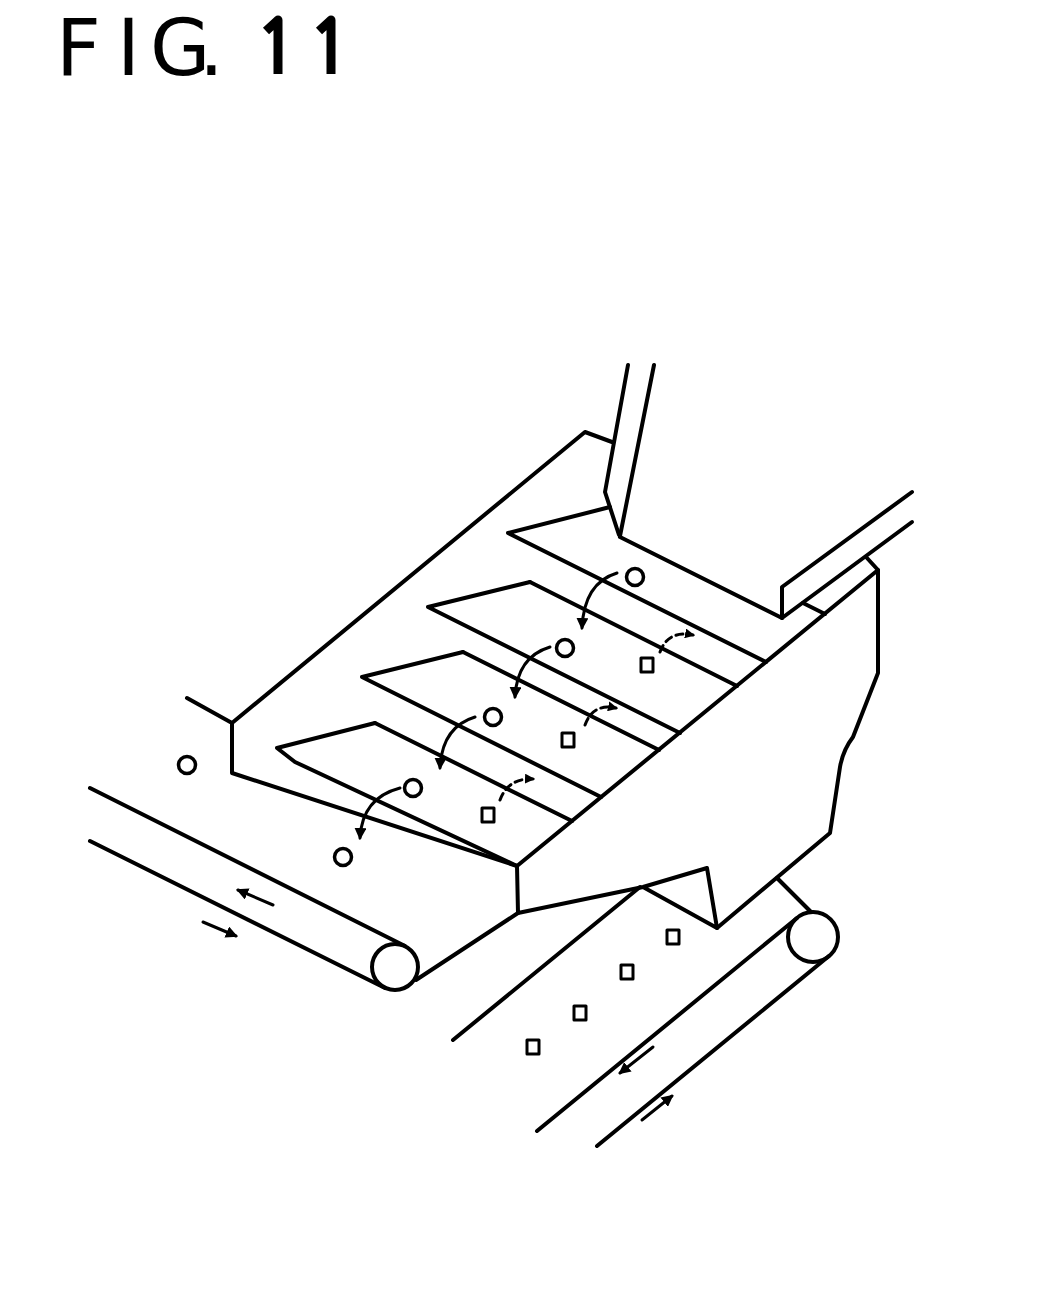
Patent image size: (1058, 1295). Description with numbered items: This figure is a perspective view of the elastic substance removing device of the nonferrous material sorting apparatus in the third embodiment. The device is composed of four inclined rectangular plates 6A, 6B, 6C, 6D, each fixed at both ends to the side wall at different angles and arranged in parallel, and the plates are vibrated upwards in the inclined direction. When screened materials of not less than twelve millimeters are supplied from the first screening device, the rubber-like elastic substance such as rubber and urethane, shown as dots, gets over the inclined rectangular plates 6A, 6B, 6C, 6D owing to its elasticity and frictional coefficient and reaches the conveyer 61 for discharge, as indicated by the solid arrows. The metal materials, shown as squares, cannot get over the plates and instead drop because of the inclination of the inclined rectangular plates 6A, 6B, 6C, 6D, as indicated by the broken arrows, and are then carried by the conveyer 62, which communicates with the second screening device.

The inclined rectangular plate 6A is at (590, 552).
The inclined rectangular plate 6B is at (530, 638).
The inclined rectangular plate 6C is at (450, 690).
The inclined rectangular plate 6D is at (355, 753).
The conveyer 61 is at (402, 893).
The conveyer 62 is at (623, 1005).